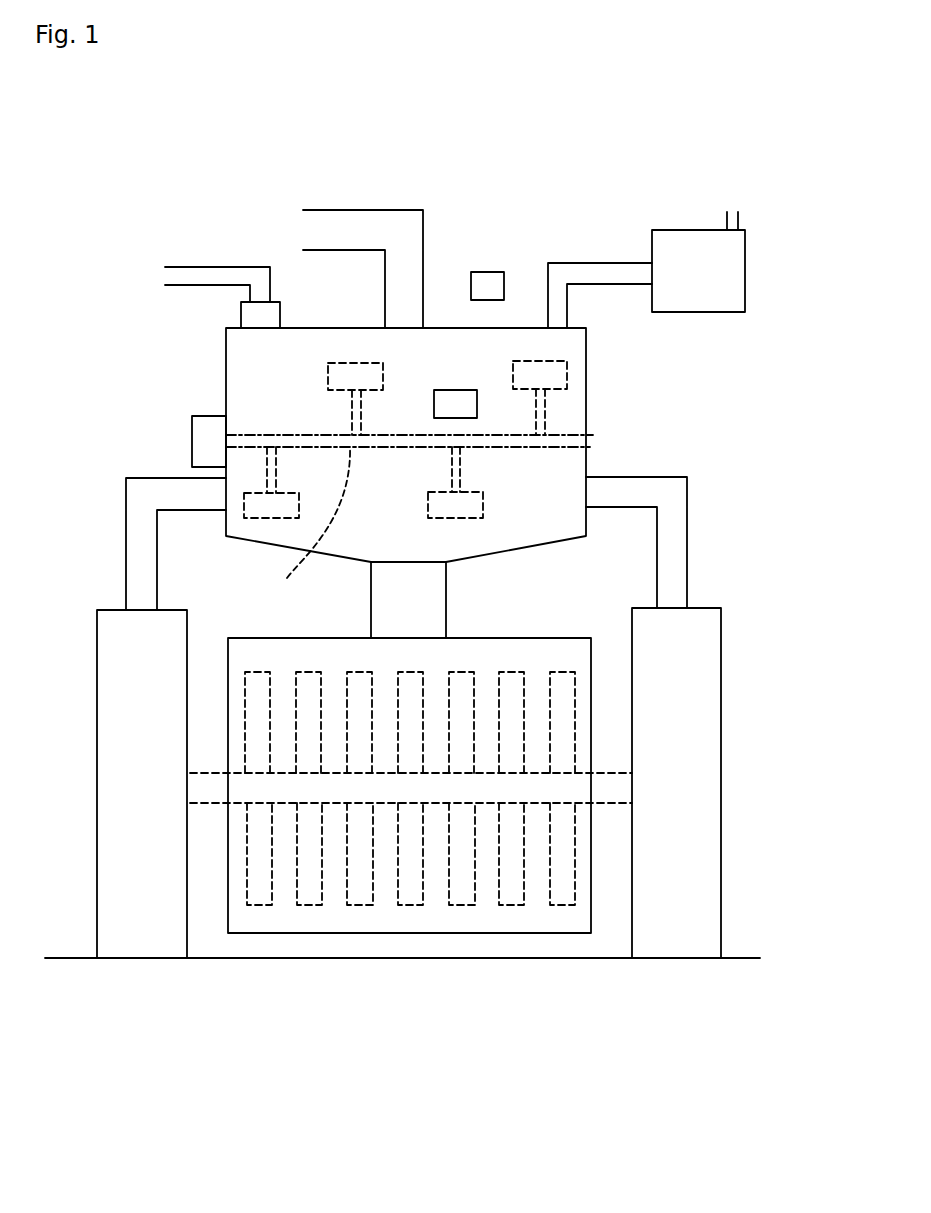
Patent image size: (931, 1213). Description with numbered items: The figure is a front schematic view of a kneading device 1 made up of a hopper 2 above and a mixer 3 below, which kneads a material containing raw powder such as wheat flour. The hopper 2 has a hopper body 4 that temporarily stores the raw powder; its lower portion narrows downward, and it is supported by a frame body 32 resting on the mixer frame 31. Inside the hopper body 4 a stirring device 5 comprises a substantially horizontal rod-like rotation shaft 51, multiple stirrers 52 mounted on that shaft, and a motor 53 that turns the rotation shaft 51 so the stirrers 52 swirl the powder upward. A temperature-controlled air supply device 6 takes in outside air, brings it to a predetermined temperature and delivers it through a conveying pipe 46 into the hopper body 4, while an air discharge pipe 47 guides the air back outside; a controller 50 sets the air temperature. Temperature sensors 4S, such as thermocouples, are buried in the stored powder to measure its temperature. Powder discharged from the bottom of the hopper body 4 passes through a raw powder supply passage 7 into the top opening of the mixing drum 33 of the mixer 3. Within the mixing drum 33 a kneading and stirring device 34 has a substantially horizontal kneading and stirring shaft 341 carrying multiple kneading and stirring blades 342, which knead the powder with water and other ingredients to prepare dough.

The kneading device 1 is at (584, 186).
The hopper 2 is at (646, 361).
The mixer 3 is at (752, 616).
The hopper body 4 is at (586, 410).
The temperature sensor 4S is at (455, 404).
The stirring device 5 is at (262, 416).
The temperature-controlled air supply device 6 is at (686, 230).
The raw powder supply passage 7 is at (447, 612).
The mixer frame 31 is at (721, 710).
The frame body 32 is at (126, 525).
The mixing drum 33 is at (520, 638).
The kneading and stirring device 34 is at (494, 914).
The kneading and stirring shaft 341 is at (433, 803).
The kneading and stirring blades 342 is at (362, 905).
The conveying pipe 46 is at (586, 263).
The air discharge pipe 47 is at (200, 267).
The controller 50 is at (490, 272).
The rotation shaft 51 is at (316, 526).
The stirrers 52 is at (304, 378).
The motor 53 is at (192, 442).